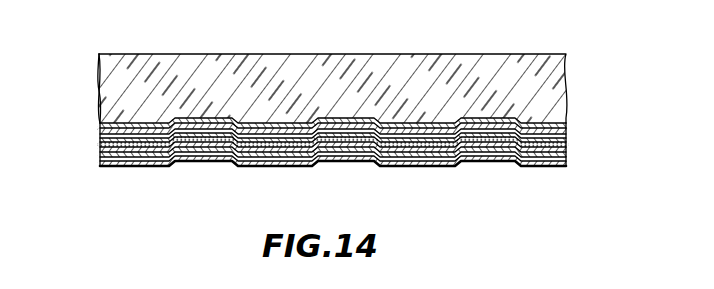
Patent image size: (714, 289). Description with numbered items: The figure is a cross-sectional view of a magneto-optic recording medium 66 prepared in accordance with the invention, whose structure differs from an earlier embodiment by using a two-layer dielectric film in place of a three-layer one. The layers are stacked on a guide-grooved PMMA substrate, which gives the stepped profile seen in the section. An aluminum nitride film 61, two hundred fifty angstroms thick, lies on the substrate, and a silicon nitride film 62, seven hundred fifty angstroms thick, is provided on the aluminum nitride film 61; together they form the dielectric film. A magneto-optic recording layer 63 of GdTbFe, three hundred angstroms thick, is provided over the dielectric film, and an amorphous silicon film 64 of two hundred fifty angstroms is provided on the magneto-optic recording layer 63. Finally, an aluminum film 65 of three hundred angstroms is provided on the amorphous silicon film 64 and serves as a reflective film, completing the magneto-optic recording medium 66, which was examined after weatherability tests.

The aluminum nitride film 61 is at (566, 125).
The silicon nitride film 62 is at (560, 66).
The magneto-optic recording layer 63 is at (566, 144).
The amorphous silicon film 64 is at (566, 153).
The aluminum film 65 is at (566, 164).
The magneto-optic recording medium 66 is at (82, 32).